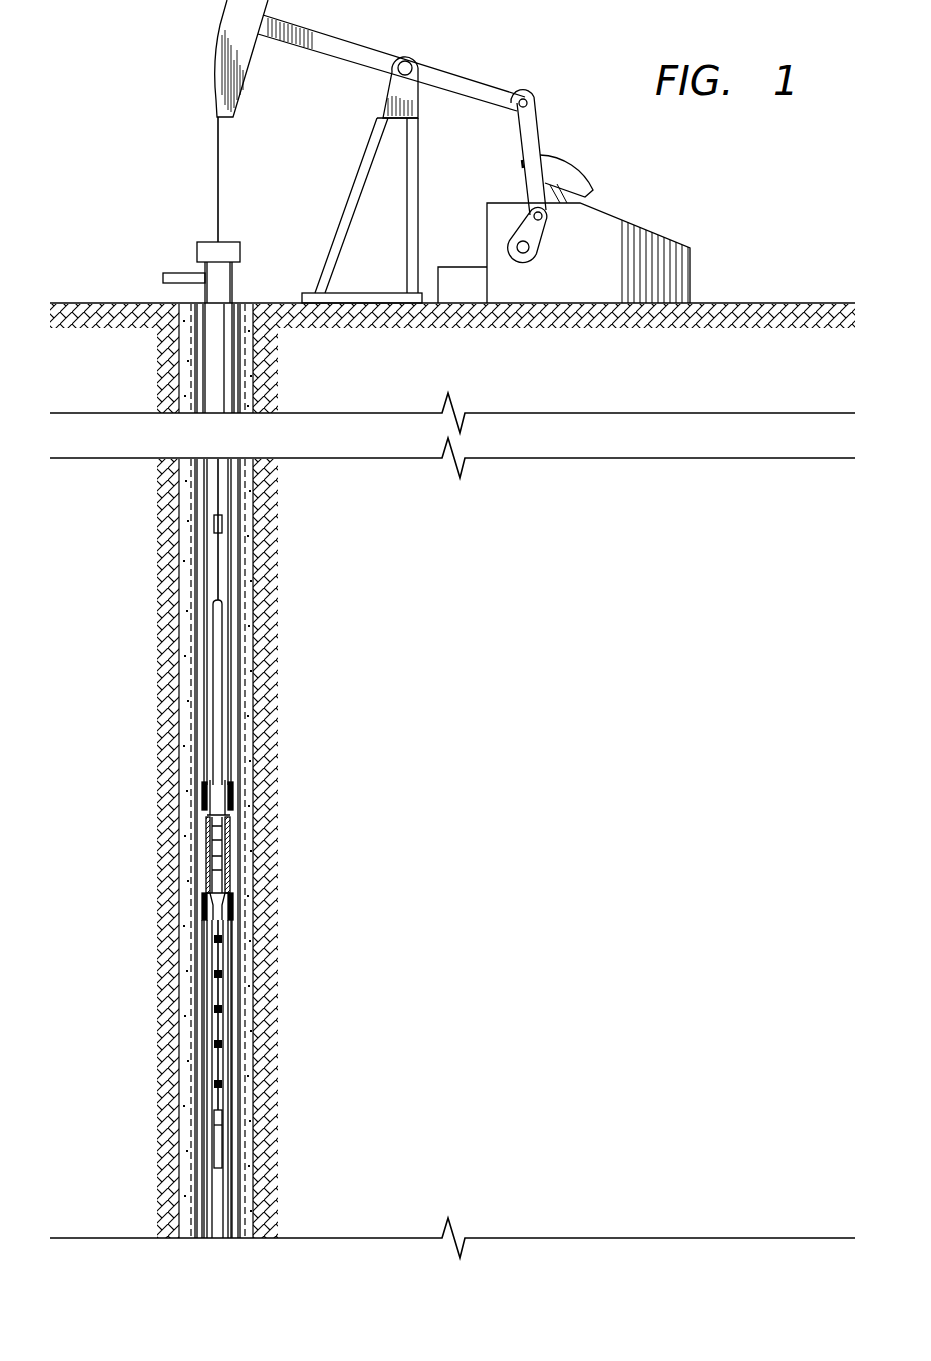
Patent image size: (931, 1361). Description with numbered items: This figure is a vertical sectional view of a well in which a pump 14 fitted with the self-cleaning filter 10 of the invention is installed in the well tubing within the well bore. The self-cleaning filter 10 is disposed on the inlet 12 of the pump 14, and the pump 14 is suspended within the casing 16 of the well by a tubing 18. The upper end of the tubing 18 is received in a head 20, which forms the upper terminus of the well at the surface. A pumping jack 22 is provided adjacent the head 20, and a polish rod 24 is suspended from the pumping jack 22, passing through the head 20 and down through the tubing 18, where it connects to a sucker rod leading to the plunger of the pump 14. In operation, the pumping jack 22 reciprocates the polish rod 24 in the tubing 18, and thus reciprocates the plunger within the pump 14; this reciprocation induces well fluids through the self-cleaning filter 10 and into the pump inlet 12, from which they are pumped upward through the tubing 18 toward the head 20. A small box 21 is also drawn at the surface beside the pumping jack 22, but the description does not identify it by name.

The self-cleaning filter 10 is at (217, 1028).
The inlet 12 is at (218, 886).
The pump 14 is at (218, 834).
The casing 16 is at (240, 711).
The tubing 18 is at (228, 576).
The head 20 is at (233, 284).
The prime mover 21 is at (458, 265).
The pumping jack 22 is at (488, 82).
The polish rod 24 is at (216, 168).